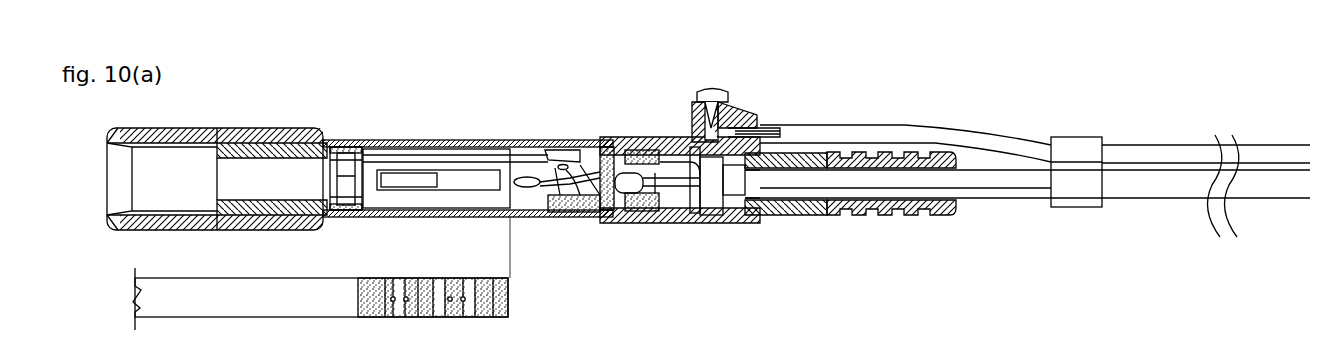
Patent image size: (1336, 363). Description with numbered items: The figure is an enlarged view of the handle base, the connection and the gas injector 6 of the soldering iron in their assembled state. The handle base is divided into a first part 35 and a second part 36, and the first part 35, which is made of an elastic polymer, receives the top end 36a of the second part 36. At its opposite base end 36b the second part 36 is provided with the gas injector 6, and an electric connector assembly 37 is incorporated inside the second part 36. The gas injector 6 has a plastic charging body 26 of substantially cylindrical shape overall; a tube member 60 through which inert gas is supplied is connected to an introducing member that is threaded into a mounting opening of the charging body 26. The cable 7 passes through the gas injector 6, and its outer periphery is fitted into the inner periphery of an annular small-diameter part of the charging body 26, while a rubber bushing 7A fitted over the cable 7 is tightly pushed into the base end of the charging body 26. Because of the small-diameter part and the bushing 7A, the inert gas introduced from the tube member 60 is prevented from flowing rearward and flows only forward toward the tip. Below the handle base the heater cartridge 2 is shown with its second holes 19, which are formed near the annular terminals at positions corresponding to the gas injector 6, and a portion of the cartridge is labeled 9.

The first part 35 is at (172, 132).
The second part 36 is at (442, 140).
The top end 36a is at (330, 147).
The base end 36b is at (597, 140).
The electric connector assembly 37 is at (410, 195).
The gas injector 6 is at (684, 87).
The charging body 26 is at (735, 112).
The tube member 60 is at (920, 128).
The rubber bushing 7A is at (933, 215).
The cable 7 is at (1008, 200).
The bar 9 is at (223, 306).
The second holes 19 is at (405, 302).
The heater cartridge 2 is at (294, 331).